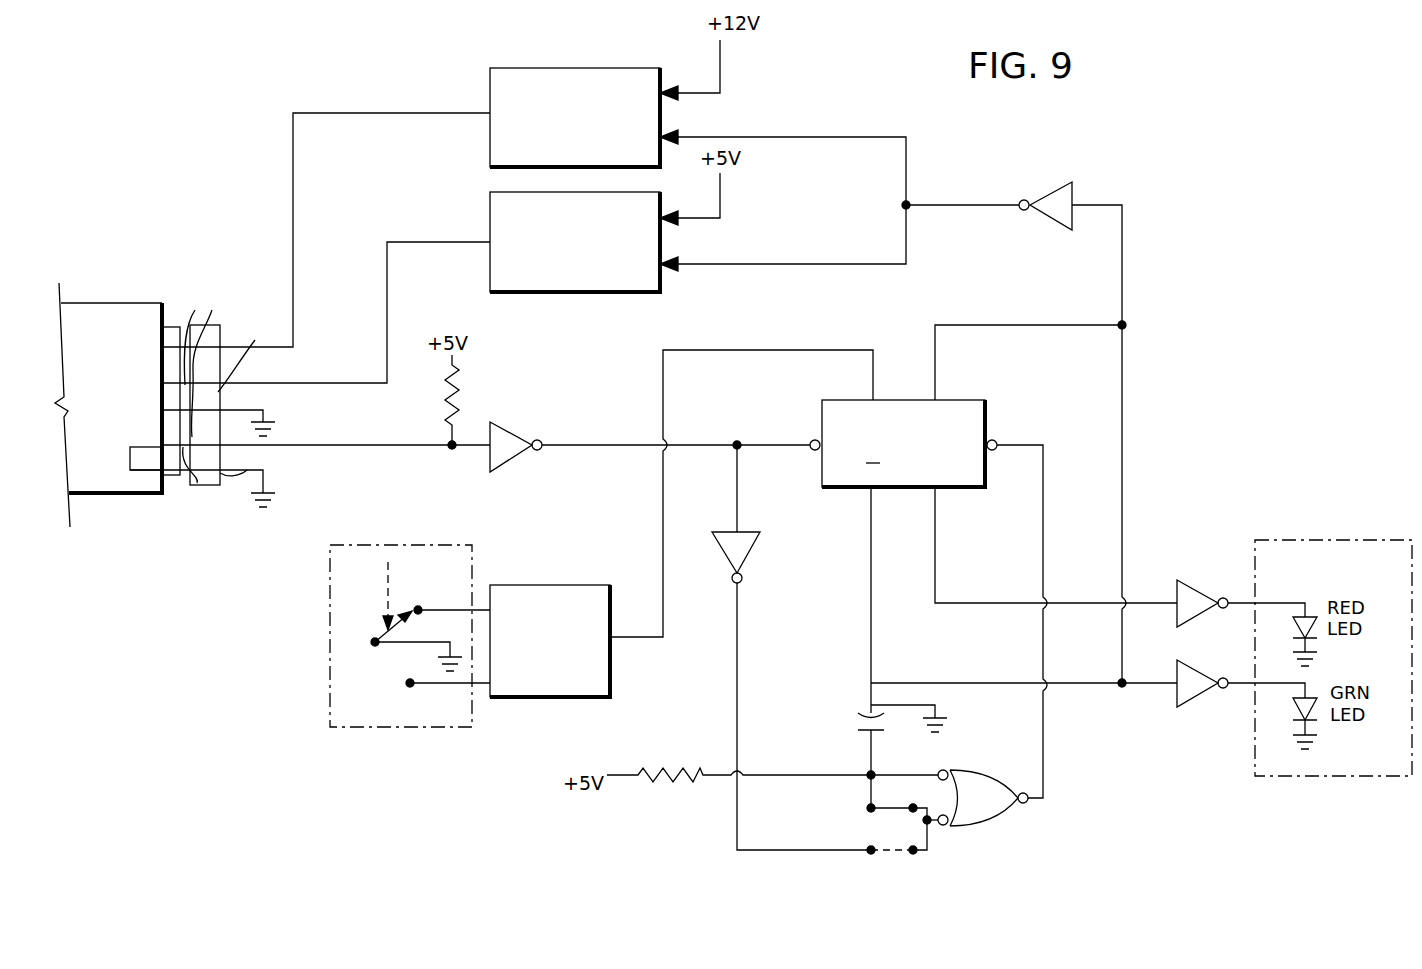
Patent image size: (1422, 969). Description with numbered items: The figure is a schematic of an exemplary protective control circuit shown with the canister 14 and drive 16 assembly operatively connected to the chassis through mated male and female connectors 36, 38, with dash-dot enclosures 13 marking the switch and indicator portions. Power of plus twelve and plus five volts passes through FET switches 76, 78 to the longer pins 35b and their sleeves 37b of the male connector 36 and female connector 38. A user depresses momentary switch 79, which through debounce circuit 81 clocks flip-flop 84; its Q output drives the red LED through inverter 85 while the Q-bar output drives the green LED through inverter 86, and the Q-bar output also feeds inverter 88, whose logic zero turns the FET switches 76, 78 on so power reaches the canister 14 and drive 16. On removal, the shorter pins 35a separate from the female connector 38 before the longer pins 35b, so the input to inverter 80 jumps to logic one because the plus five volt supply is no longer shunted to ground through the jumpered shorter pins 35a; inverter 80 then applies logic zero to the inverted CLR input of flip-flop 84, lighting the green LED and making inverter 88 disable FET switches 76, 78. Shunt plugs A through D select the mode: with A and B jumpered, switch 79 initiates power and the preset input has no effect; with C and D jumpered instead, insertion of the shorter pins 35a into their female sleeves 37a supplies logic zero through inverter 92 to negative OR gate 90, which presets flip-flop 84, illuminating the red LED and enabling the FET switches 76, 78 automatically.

The switch / indicator unit (dash-dot enclosure) 13 is at (375, 730).
The canister 14 is at (108, 405).
The drive 16 is at (108, 405).
The shorter pins 35a is at (184, 487).
The longer pins 35b is at (196, 381).
The male connector 36 is at (176, 478).
The female sleeves 37a is at (218, 455).
The sleeves 37b is at (220, 347).
The female connector 38 is at (222, 397).
The FET switch 76 is at (596, 68).
The FET switch 78 is at (607, 292).
The momentary switch 79 is at (355, 670).
The inverter 80 is at (515, 436).
The debounce circuit 81 is at (547, 697).
The flip-flop 84 is at (855, 487).
The inverter 85 is at (1219, 575).
The inverter 86 is at (1185, 702).
The inverter 88 is at (1056, 191).
The negative OR gate 90 is at (1005, 814).
The inverter 92 is at (747, 555).